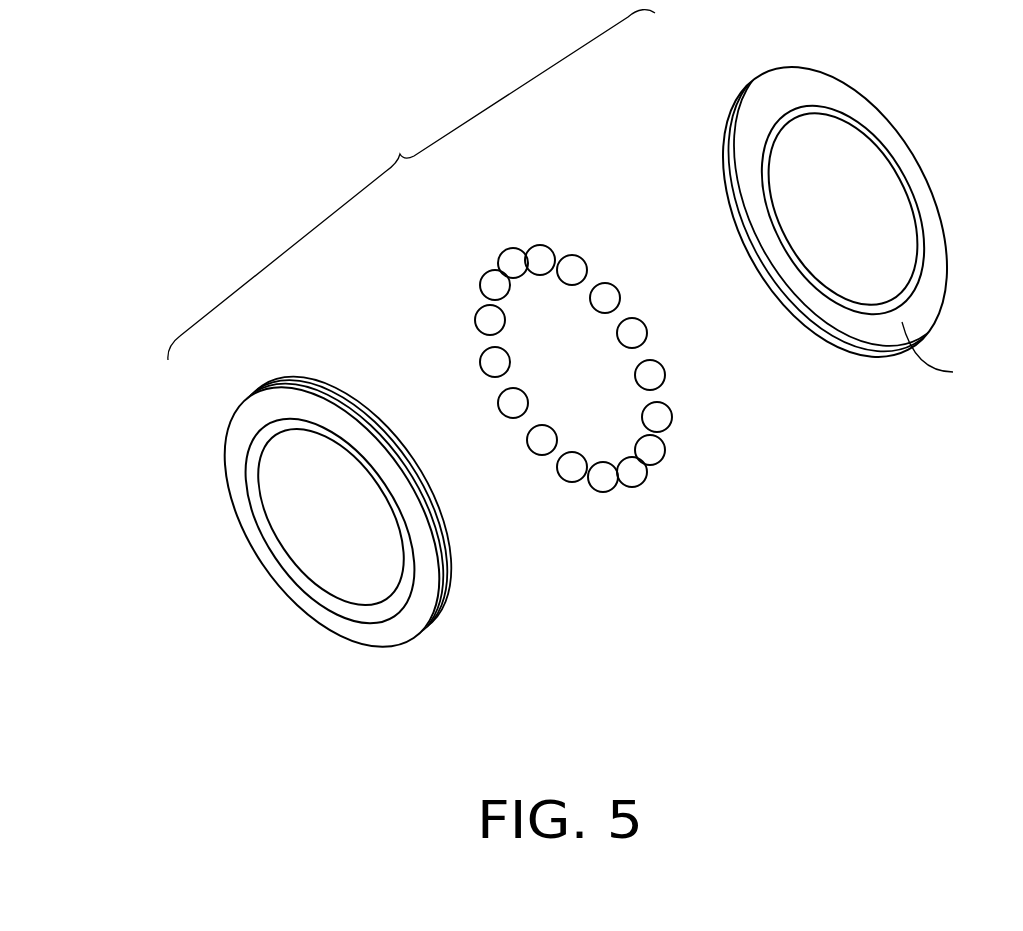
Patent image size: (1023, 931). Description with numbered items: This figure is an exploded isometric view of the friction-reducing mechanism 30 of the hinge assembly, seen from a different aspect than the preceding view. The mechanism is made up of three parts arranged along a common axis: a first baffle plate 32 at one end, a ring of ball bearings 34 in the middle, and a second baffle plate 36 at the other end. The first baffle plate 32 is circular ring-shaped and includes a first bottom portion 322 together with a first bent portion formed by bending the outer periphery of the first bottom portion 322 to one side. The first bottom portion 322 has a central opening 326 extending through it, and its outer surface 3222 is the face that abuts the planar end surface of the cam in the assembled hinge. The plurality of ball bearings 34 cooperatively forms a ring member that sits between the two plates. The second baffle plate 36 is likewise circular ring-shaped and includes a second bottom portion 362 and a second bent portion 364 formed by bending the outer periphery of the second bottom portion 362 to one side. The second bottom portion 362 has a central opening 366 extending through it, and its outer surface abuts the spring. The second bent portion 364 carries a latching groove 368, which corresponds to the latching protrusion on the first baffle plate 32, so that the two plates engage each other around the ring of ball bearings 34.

The friction-reducing mechanism 30 is at (411, 185).
The first baffle plate 32 is at (313, 527).
The first bottom portion 322 is at (340, 533).
The outer surface 3222 is at (305, 607).
The central opening 326 is at (298, 463).
The ball bearings 34 is at (538, 257).
The second baffle plate 36 is at (822, 219).
The second bottom portion 362 is at (957, 358).
The second bent portion 364 is at (885, 148).
The central opening 366 is at (855, 225).
The latching groove 368 is at (728, 197).